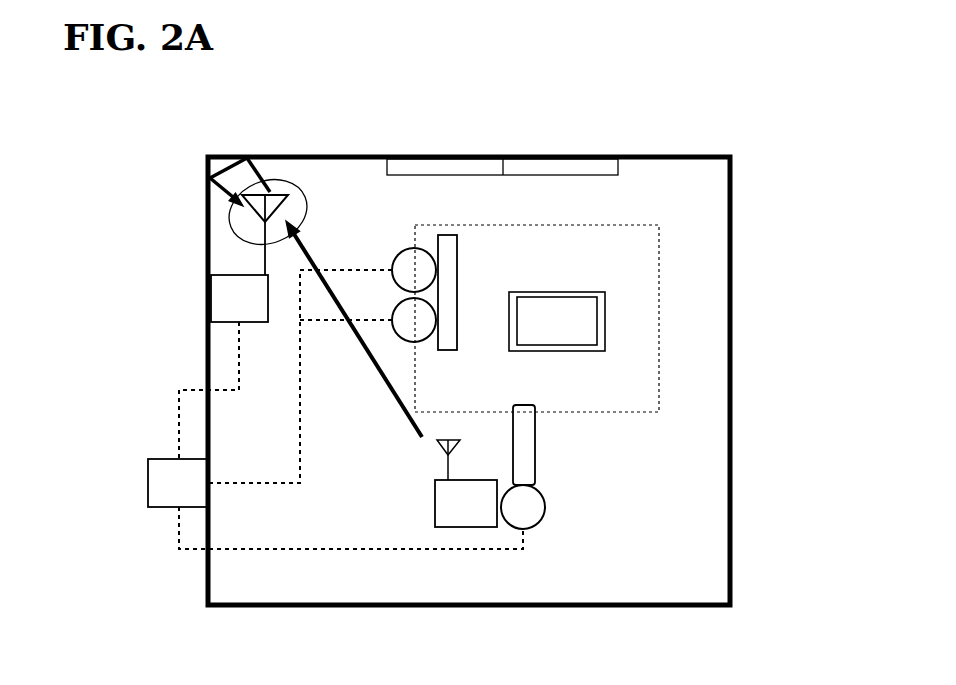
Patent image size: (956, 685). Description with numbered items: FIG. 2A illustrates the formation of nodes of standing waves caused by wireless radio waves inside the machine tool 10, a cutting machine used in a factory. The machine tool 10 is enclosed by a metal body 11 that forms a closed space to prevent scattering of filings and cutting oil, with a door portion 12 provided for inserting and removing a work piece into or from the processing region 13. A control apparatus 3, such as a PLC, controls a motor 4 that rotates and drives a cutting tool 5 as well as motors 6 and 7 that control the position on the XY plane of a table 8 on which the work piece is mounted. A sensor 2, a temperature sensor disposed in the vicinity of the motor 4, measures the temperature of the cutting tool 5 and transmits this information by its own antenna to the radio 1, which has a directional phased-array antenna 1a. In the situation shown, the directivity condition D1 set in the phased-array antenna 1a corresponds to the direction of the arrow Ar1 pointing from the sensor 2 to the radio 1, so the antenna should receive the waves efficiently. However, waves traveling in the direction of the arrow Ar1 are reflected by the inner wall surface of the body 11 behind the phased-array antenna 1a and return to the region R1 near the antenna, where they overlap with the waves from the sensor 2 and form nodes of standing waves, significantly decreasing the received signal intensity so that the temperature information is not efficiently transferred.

The radio 1 is at (208, 300).
The phased-array antenna 1a is at (265, 258).
The sensor 2 is at (436, 508).
The control apparatus 3 is at (148, 470).
The motor 4 is at (538, 524).
The cutting tool 5 is at (535, 440).
The motor 6 is at (394, 307).
The motor 7 is at (400, 251).
The table 8 is at (448, 235).
The machine tool 10 is at (754, 553).
The body 11 is at (383, 608).
The door portion 12 is at (579, 157).
The processing region 13 is at (633, 224).
The region R1 is at (302, 186).
The arrow Ar1 is at (381, 372).
The directivity condition D1 is at (247, 169).